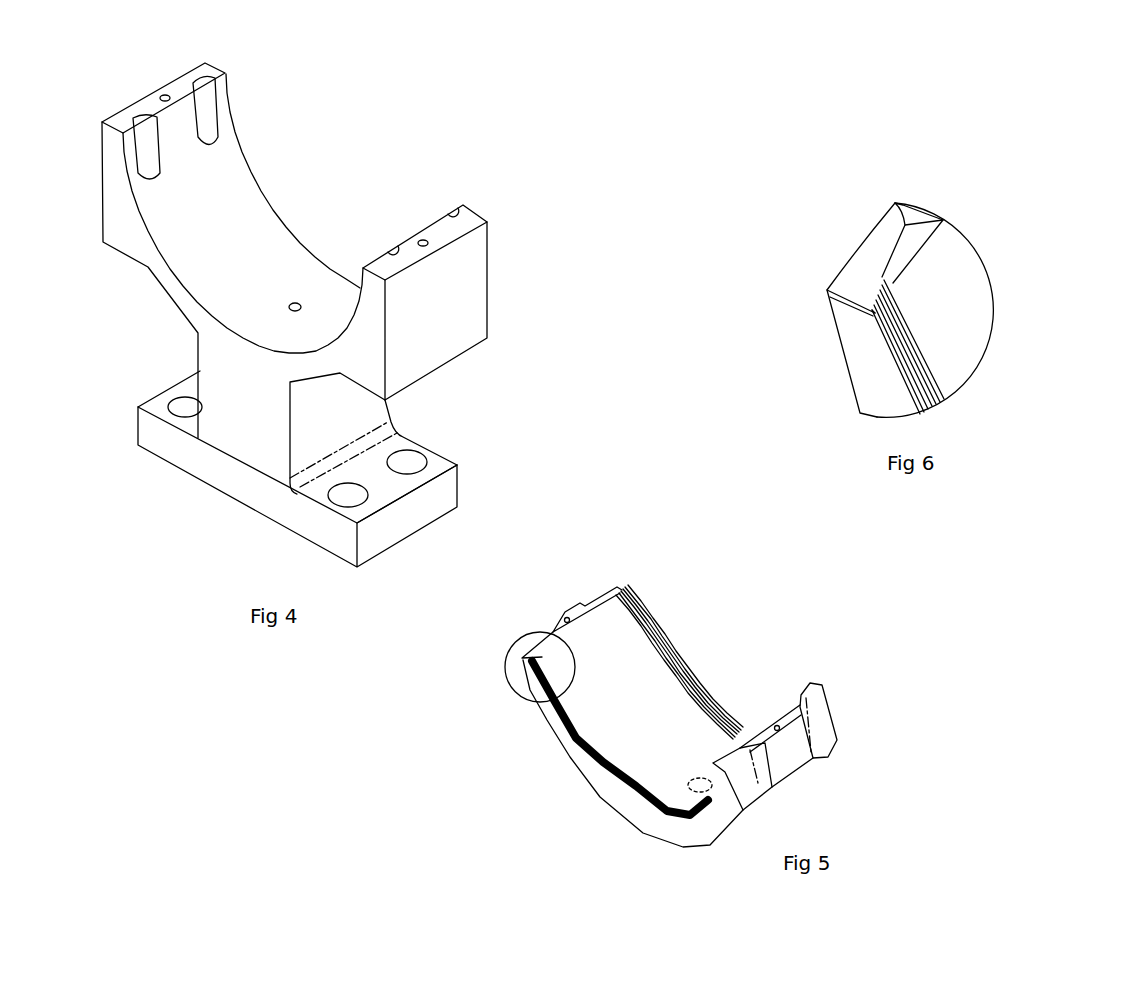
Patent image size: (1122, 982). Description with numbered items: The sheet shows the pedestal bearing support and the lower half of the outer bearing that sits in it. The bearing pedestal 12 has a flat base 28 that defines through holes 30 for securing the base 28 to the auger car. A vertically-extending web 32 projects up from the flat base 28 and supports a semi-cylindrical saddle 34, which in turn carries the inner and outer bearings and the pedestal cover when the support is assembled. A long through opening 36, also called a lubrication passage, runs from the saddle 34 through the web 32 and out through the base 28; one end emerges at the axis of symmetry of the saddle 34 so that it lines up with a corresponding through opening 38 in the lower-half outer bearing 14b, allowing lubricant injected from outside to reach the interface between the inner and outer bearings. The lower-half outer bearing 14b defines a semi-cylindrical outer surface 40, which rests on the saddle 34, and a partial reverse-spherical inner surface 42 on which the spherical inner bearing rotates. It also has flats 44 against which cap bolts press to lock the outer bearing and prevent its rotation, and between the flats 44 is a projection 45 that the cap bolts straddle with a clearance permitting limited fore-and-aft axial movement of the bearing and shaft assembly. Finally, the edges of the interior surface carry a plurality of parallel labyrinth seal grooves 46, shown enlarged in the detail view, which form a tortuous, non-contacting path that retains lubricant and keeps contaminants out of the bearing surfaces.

In FIG. 4, the bearing pedestal 12 is at (392, 157).
In FIG. 4, the flat base 28 is at (158, 440).
In FIG. 4, the through holes 30 is at (430, 452).
In FIG. 4, the vertically-extending web 32 is at (247, 442).
In FIG. 4, the semi-cylindrical saddle 34 is at (212, 192).
In FIG. 4, the through opening 36 is at (300, 297).
In FIG. 5, the lower-half outer bearing 14b is at (705, 625).
In FIG. 6, the lower-half outer bearing 14b is at (968, 190).
In FIG. 5, the through opening 38 is at (710, 757).
In FIG. 5, the semi-cylindrical outer surface 40 is at (773, 805).
In FIG. 5, the partial reverse-spherical inner surface 42 is at (608, 675).
In FIG. 6, the partial reverse-spherical inner surface 42 is at (940, 298).
In FIG. 5, the flats 44 is at (605, 593).
In FIG. 5, the projection 45 is at (563, 613).
In FIG. 5, the labyrinth seal grooves 46 is at (683, 678).
In FIG. 6, the labyrinth seal grooves 46 is at (833, 308).